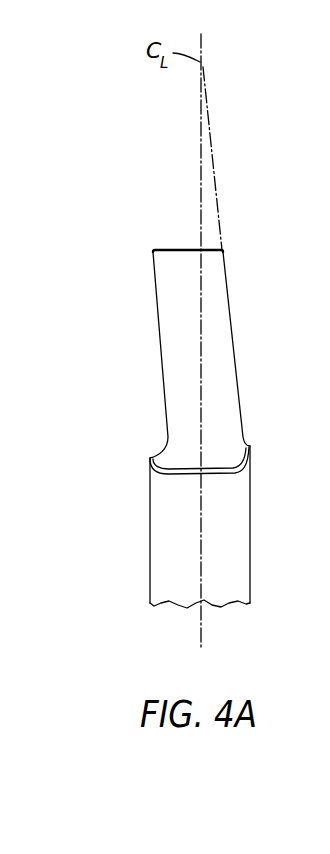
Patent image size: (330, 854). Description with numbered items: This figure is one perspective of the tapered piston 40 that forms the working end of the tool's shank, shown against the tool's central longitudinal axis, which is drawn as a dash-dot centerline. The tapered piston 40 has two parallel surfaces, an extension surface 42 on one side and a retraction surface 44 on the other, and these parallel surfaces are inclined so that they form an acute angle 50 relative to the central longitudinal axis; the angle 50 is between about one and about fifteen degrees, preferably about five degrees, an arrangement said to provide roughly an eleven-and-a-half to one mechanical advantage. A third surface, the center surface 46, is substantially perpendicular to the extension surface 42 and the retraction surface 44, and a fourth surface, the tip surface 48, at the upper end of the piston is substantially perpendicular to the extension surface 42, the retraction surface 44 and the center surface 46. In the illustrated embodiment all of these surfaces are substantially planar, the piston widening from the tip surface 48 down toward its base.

The tapered piston 40 is at (127, 367).
The extension surface 42 is at (231, 322).
The retraction surface 44 is at (160, 326).
The center surface 46 is at (225, 400).
The tip surface 48 is at (172, 250).
The acute angle 50 is at (163, 98).